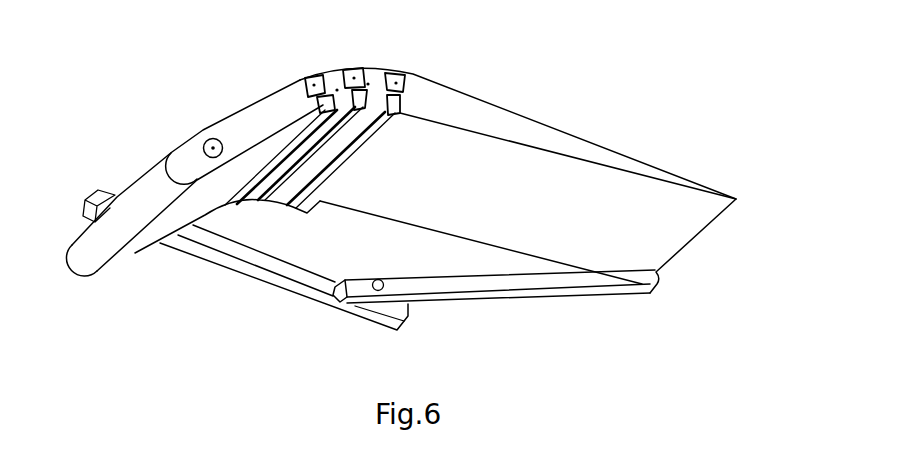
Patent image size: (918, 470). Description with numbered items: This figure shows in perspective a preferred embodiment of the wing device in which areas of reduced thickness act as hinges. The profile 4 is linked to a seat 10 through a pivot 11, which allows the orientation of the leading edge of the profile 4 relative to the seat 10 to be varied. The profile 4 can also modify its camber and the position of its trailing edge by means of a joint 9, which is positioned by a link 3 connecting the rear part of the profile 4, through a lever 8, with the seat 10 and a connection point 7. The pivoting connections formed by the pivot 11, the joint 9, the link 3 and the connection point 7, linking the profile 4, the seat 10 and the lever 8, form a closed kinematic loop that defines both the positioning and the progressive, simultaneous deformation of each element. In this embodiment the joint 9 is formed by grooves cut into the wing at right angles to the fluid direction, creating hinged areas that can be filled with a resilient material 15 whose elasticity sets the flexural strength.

The link 3 is at (628, 287).
The profile 4 is at (260, 125).
The connection point 7 is at (368, 297).
The lever 8 is at (486, 283).
The joint 9 is at (397, 79).
The seat 10 is at (207, 255).
The pivot 11 is at (211, 147).
The resilient material 15 is at (398, 88).